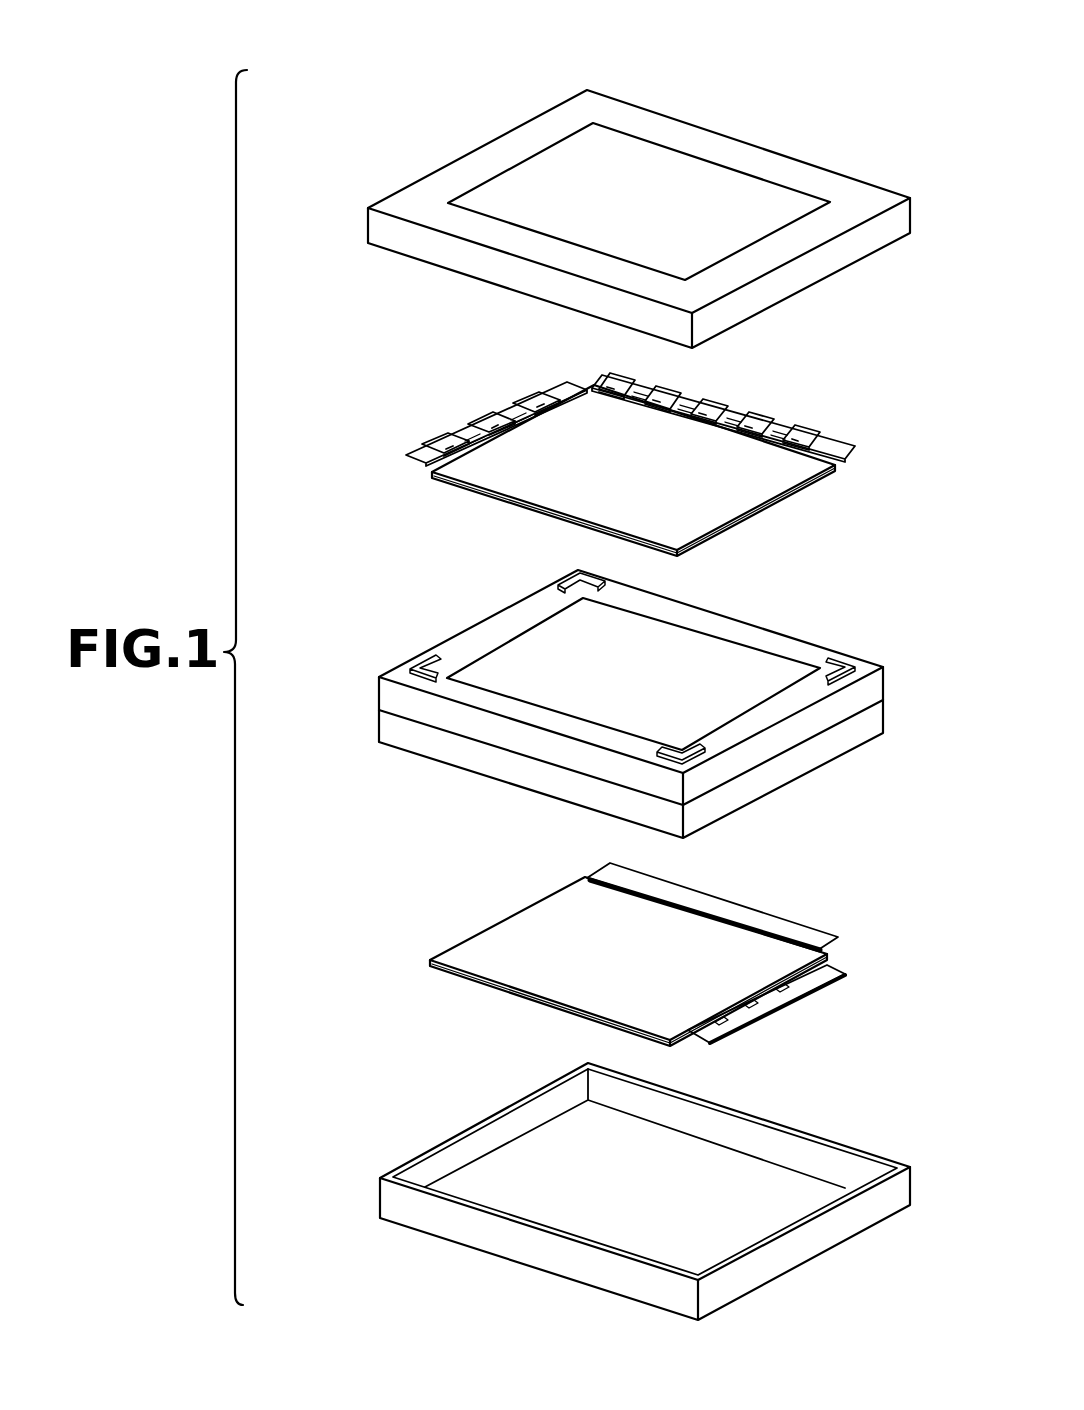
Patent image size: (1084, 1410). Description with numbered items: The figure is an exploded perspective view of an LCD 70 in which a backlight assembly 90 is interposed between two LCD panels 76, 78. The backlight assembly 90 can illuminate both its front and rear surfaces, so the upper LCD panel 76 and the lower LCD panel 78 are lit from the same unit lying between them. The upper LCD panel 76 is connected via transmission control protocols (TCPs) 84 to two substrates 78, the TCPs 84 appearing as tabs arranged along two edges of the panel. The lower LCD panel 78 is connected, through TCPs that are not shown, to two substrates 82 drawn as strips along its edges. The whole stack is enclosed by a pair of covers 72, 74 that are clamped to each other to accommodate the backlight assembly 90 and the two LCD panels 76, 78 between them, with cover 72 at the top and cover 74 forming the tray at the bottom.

The LCD 70 is at (739, 113).
The front cover 72 is at (852, 188).
The front cover 74 is at (812, 1131).
The LCD panel 76 is at (665, 485).
The LCD panel 78 is at (465, 427).
The substrate 82 is at (727, 912).
The transmission control protocol (TCP) 84 is at (437, 443).
The backlight assembly 90 is at (785, 632).